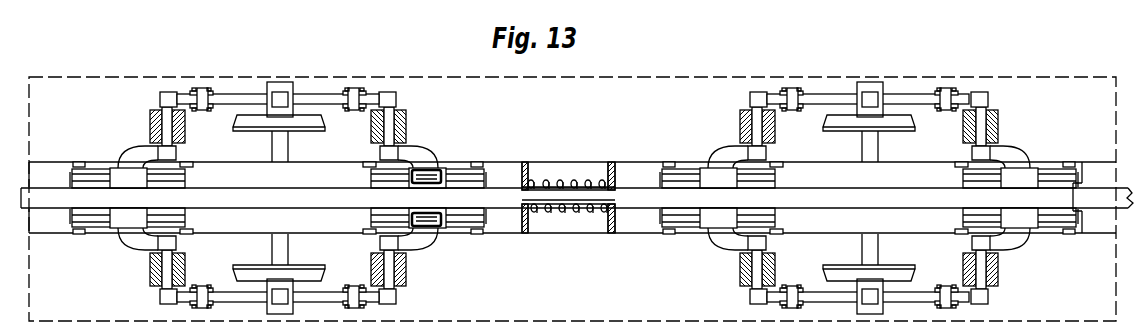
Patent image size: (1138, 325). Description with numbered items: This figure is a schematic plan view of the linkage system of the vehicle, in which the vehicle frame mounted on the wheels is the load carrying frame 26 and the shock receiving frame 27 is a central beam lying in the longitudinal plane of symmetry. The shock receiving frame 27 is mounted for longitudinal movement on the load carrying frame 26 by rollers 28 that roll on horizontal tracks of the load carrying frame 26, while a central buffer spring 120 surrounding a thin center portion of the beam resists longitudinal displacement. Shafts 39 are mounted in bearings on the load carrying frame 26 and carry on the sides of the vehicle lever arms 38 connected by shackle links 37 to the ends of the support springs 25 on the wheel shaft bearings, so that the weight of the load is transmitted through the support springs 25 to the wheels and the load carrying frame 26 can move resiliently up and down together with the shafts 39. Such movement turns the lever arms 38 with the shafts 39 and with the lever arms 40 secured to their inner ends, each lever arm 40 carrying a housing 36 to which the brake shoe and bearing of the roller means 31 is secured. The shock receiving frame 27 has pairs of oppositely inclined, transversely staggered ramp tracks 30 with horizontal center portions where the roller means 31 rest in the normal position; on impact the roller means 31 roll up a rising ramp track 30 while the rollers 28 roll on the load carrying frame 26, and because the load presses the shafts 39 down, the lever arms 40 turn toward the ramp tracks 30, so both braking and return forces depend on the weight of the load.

The support spring 25 is at (835, 96).
The load carrying frame 26 is at (407, 113).
The shock receiving frame 27 is at (632, 208).
The roller 28 is at (78, 233).
The ramp track 30 is at (148, 173).
The roller means 31 is at (407, 219).
The housing 36 is at (125, 217).
The shackle link 37 is at (203, 90).
The lever arm 38 is at (181, 93).
The shaft 39 is at (170, 119).
The lever arm 40 is at (147, 242).
The central buffer spring 120 is at (568, 178).